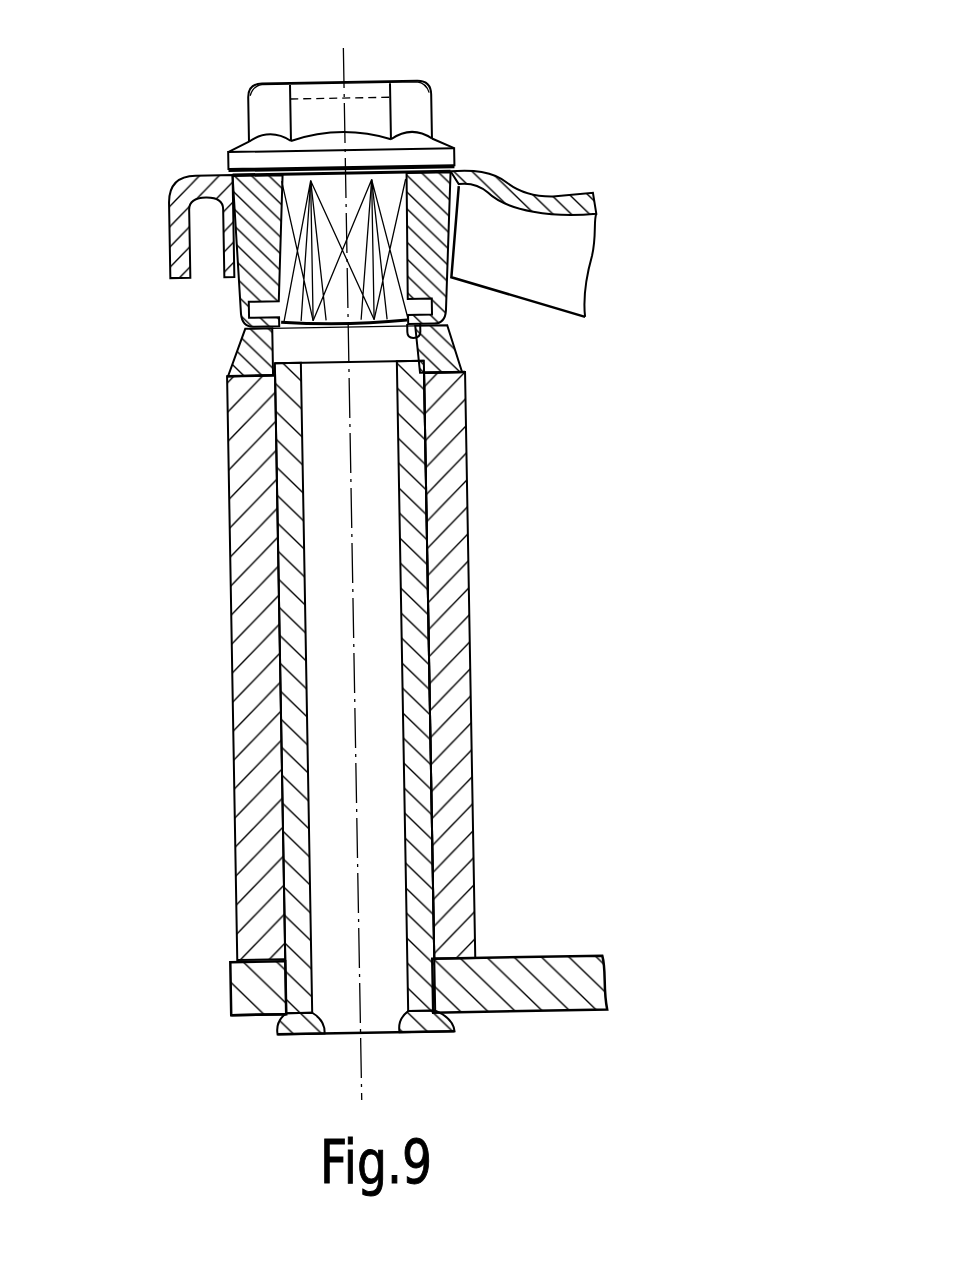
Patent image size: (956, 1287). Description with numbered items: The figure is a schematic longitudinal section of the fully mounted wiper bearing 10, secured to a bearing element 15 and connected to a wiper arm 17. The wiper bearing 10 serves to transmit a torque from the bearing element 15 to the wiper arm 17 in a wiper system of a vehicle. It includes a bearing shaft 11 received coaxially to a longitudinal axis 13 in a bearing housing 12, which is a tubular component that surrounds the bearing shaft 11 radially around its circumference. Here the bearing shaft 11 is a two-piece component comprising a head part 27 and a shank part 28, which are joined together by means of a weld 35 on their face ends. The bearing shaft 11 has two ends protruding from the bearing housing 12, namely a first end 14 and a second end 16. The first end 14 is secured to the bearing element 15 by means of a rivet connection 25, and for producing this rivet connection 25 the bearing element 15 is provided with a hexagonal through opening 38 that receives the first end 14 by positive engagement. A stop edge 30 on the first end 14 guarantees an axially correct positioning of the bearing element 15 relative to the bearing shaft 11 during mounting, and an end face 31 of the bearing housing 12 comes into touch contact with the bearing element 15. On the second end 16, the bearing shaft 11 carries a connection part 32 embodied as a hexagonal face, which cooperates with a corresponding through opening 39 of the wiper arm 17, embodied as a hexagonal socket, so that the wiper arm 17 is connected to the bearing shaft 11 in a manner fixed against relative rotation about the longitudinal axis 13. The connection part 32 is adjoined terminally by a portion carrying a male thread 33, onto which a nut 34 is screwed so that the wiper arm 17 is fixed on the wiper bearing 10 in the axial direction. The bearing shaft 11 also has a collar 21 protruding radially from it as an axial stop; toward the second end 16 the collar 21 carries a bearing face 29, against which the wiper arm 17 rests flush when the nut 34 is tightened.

The wiper bearing 10 is at (148, 124).
The bearing shaft 11 is at (357, 574).
The bearing housing 12 is at (446, 635).
The longitudinal axis 13 is at (356, 766).
The first end 14 is at (300, 1036).
The bearing element 15 is at (512, 986).
The second end 16 is at (322, 236).
The wiper arm 17 is at (568, 176).
The collar 21 is at (432, 357).
The rivet connection 25 is at (272, 1025).
The head part 27 is at (218, 345).
The shank part 28 is at (298, 650).
The bearing face 29 is at (452, 284).
The stop edge 30 is at (236, 990).
The end face 31 is at (232, 972).
The connection part 32 is at (322, 268).
The male thread 33 is at (398, 118).
The nut 34 is at (276, 104).
The weld 35 is at (230, 372).
The through opening 38 is at (434, 950).
The through opening 39 is at (455, 342).